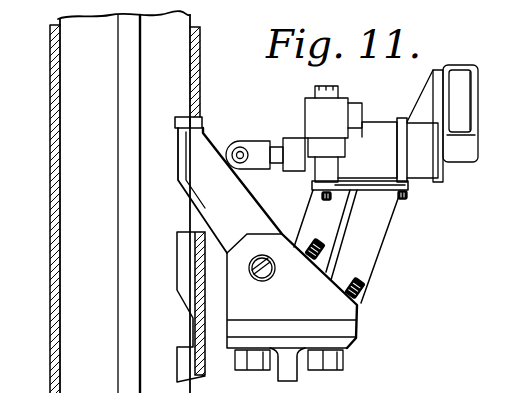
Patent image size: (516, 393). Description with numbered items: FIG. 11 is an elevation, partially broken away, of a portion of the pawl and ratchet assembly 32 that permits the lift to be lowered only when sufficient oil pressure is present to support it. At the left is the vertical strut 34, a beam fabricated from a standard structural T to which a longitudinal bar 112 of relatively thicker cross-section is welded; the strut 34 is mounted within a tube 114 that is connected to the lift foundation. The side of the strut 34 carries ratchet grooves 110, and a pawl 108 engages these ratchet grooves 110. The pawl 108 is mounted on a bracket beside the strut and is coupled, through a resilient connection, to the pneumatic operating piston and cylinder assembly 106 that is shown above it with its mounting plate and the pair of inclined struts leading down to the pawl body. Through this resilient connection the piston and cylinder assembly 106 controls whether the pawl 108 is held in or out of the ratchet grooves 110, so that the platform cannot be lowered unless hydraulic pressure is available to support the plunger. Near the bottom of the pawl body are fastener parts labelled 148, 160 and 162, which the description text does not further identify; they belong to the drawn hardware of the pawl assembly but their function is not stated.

The pawl and ratchet assembly 32 is at (376, 116).
The vertical strut 34 is at (122, 80).
The operating piston and cylinder assembly 106 is at (385, 168).
The pawl 108 is at (202, 156).
The ratchet grooves 110 is at (187, 262).
The longitudinal bar 112 is at (168, 88).
The tube 114 is at (59, 192).
The nut 148 is at (348, 392).
The shaft 160 is at (287, 392).
The bolt 162 is at (266, 391).